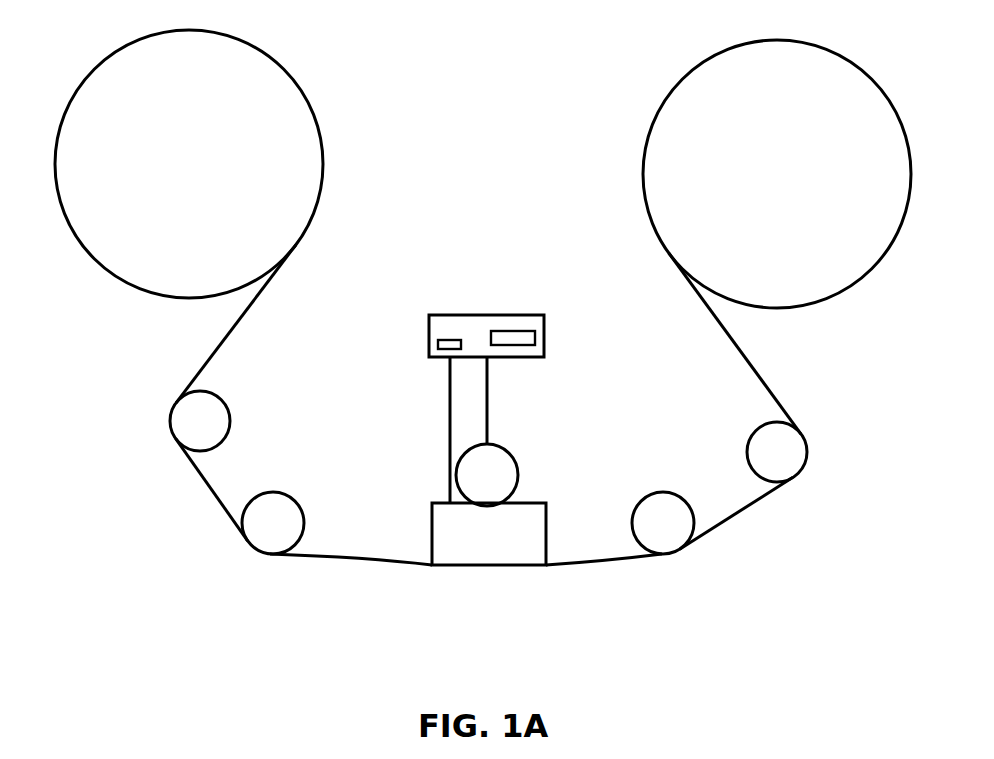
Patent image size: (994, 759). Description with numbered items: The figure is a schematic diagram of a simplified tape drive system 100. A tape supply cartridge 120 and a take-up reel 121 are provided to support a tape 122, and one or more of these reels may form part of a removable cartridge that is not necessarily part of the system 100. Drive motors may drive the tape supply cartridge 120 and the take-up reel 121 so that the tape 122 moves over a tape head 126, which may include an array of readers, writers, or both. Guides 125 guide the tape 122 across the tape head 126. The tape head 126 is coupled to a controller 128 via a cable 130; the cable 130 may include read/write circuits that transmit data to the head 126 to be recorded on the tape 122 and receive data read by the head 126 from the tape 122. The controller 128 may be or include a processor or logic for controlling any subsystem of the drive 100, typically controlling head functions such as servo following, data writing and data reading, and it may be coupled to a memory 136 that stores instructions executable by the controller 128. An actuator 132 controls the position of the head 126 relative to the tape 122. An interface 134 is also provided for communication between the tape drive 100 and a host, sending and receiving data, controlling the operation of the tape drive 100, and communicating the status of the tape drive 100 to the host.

The tape drive system 100 is at (158, 359).
The tape supply cartridge 120 is at (323, 138).
The take-up reel 121 is at (860, 282).
The tape 122 is at (355, 560).
The guides 125 is at (273, 492).
The tape head 126 is at (546, 535).
The controller 128 is at (485, 315).
The cable 130 is at (447, 470).
The actuator 132 is at (508, 453).
The interface 134 is at (522, 331).
The memory 136 is at (450, 339).